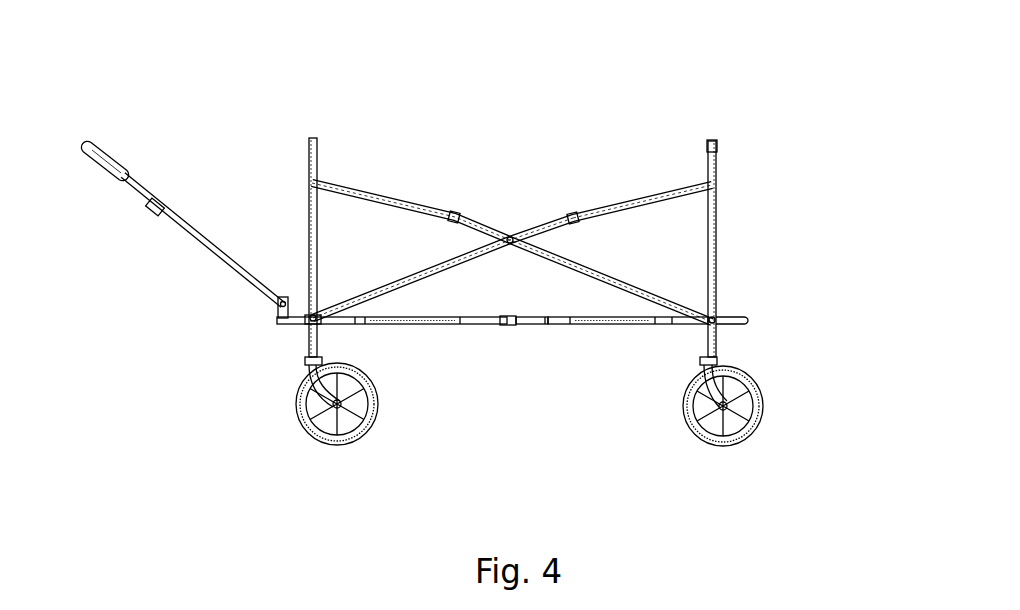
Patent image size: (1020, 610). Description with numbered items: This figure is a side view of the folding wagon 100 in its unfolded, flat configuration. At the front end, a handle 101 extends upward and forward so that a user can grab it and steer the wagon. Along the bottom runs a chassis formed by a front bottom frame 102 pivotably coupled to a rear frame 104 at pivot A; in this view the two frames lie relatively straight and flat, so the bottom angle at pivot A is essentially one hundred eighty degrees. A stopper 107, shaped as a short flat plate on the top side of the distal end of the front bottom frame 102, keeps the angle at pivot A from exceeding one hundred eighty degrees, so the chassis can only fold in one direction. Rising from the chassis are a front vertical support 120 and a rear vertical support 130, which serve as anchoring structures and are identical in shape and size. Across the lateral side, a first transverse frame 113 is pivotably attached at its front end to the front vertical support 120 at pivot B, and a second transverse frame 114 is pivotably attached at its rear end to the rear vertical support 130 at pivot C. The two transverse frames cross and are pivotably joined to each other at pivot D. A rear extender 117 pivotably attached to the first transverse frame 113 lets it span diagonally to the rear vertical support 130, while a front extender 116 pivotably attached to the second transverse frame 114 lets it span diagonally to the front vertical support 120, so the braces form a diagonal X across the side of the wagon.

The folding wagon 100 is at (702, 98).
The handle 101 is at (115, 172).
The front bottom frame 102 is at (390, 325).
The rear frame 104 is at (590, 325).
The stopper 107 is at (542, 316).
The first transverse frame 113 is at (353, 193).
The second transverse frame 114 is at (716, 262).
The front extender 116 is at (410, 277).
The rear extender 117 is at (667, 192).
The front vertical support 120 is at (310, 257).
The rear vertical support 130 is at (716, 158).
The pivot A is at (510, 325).
The pivot B is at (310, 320).
The pivot C is at (733, 317).
The pivot D is at (510, 236).